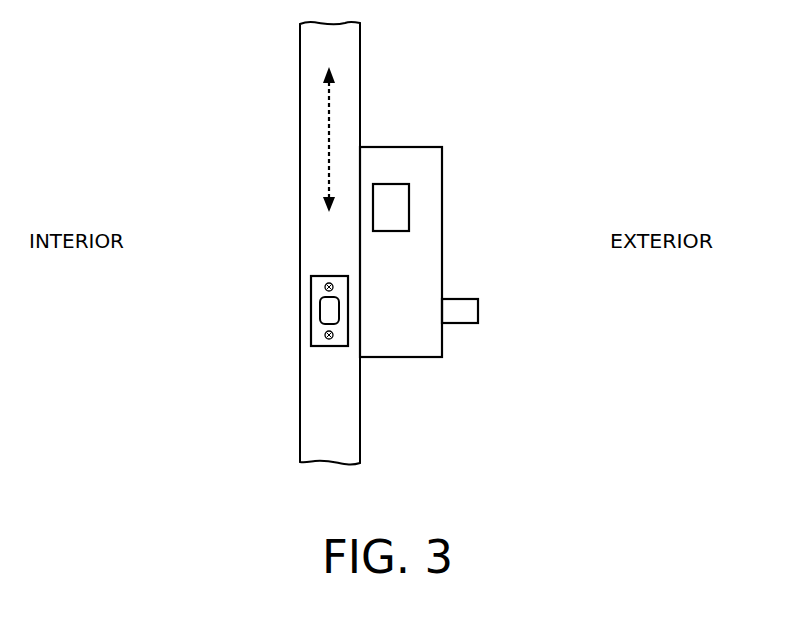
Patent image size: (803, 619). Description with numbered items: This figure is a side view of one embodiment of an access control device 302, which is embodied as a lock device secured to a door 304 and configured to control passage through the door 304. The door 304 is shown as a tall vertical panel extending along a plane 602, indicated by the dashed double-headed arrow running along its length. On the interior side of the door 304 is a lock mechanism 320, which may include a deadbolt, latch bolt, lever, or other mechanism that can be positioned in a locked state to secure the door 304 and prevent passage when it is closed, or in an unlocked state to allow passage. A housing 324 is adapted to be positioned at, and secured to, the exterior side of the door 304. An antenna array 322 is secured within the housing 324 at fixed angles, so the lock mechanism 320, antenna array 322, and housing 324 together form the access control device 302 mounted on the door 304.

The access control device 302 is at (152, 59).
The door 304 is at (300, 167).
The lock mechanism 320 is at (320, 310).
The antenna array 322 is at (410, 207).
The housing 324 is at (402, 147).
The plane 602 is at (327, 115).